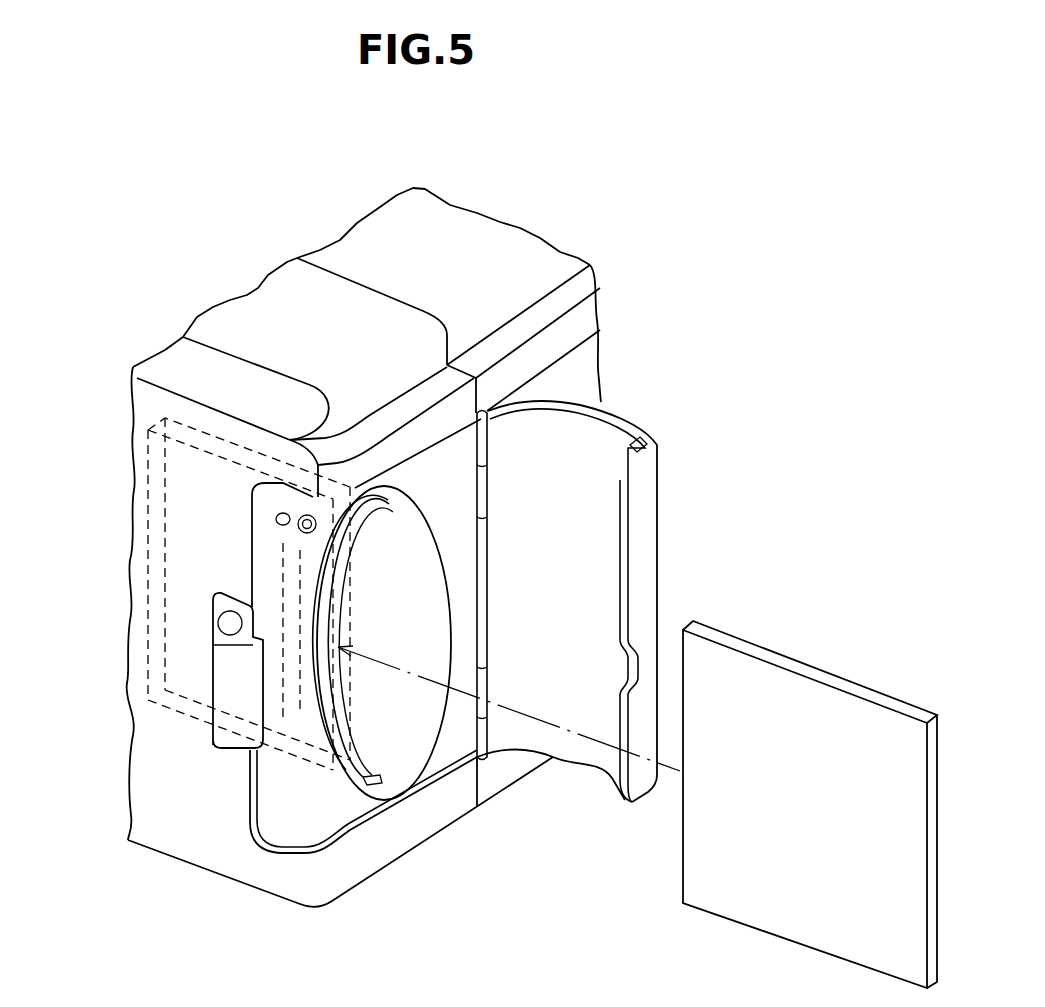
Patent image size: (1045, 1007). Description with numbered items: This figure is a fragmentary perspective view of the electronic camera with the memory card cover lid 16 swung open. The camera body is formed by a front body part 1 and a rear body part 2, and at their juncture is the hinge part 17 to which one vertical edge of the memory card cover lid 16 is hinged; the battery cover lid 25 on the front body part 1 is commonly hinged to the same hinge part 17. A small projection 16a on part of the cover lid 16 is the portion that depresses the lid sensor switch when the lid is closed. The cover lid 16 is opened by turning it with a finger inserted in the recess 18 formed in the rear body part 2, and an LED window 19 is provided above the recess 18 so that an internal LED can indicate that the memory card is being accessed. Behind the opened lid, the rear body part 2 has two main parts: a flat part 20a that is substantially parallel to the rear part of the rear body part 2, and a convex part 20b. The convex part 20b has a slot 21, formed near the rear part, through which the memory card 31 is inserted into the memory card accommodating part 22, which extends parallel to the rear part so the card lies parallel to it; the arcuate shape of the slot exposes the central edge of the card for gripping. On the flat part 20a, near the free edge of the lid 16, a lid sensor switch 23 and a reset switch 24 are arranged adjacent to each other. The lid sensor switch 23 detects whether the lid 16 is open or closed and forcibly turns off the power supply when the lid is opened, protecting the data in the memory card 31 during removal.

The front body part 1 is at (532, 763).
The rear body part 2 is at (260, 875).
The memory card cover lid 16 is at (642, 550).
The engaging tab 16a is at (647, 433).
The hinge part 17 is at (490, 735).
The recess 18 is at (212, 717).
The LED window 19 is at (218, 621).
The flat part 20a is at (305, 820).
The convex part 20b is at (420, 753).
The slot 21 is at (403, 737).
The memory card accommodating part 22 is at (165, 418).
The lid sensor switch 23 is at (298, 530).
The reset switch 24 is at (277, 521).
The battery cover lid 25 is at (587, 377).
The memory card 31 is at (788, 685).